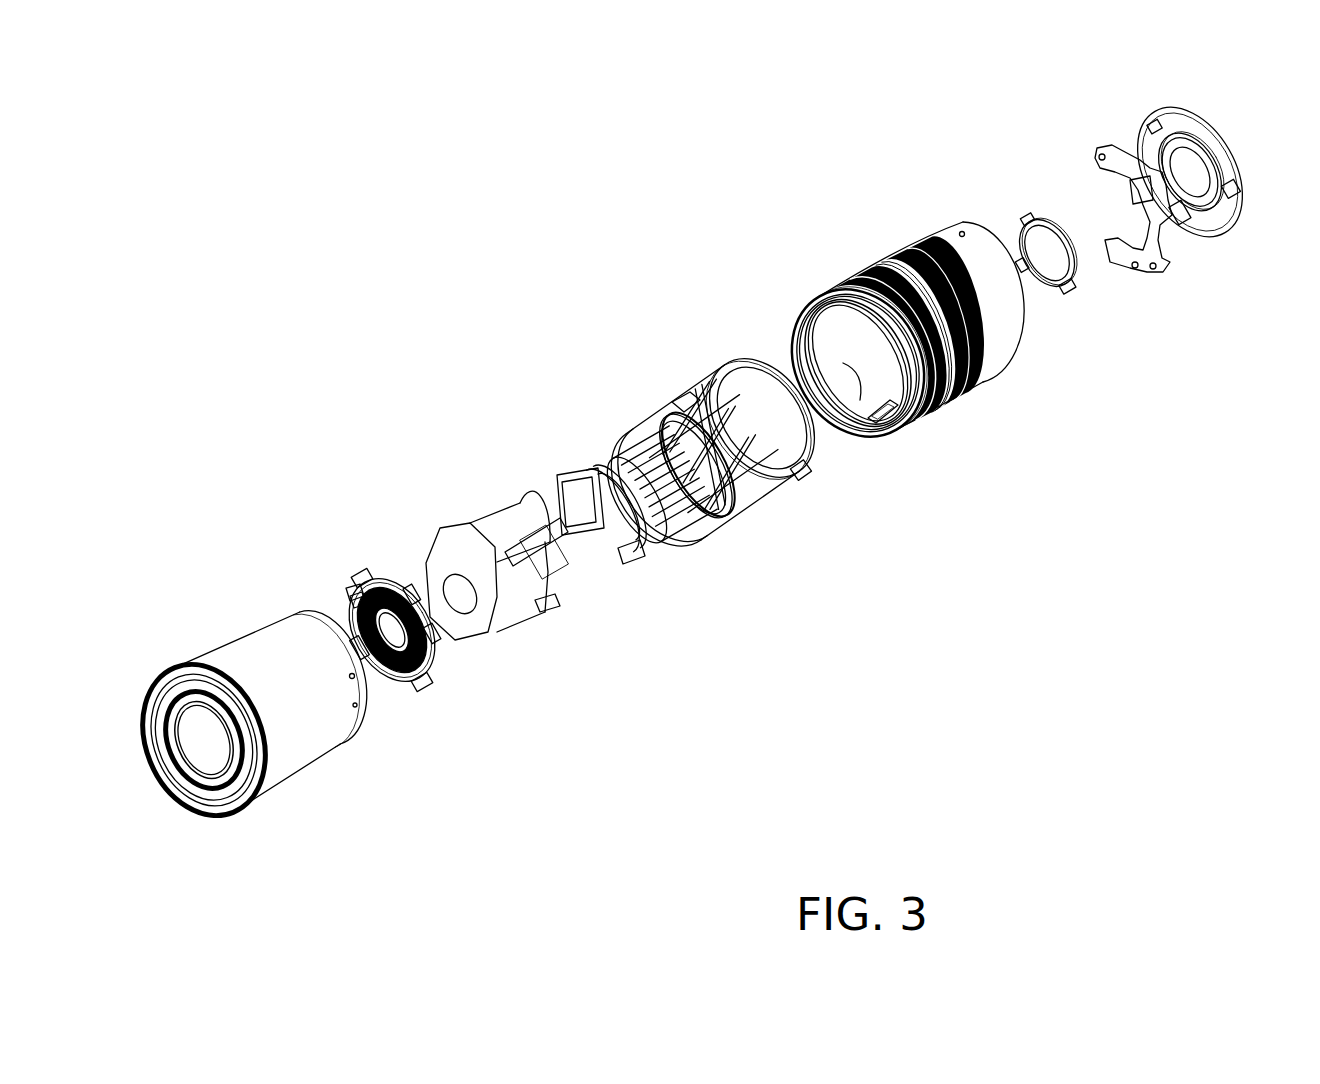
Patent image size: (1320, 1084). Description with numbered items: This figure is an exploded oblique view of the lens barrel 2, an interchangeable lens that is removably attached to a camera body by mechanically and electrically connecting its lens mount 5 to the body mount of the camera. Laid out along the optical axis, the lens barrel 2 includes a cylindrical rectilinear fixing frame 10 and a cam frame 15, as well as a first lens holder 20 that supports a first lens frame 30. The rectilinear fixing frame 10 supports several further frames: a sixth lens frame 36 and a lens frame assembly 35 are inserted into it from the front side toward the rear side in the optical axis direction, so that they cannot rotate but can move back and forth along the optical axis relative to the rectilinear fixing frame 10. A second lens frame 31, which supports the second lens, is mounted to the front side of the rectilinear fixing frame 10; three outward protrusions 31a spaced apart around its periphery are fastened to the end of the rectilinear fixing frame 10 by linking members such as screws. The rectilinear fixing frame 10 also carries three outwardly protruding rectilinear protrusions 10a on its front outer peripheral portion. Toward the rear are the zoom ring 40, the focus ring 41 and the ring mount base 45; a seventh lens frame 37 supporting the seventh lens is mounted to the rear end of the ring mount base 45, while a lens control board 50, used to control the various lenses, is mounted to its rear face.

The lens barrel 2 is at (518, 348).
The lens mount 5 is at (1223, 245).
The rectilinear fixing frame 10 is at (678, 508).
The rectilinear protrusion 10a is at (683, 403).
The cam frame 15 is at (745, 517).
The first lens holder 20 is at (328, 758).
The first lens frame 30 is at (170, 690).
The second lens frame 31 is at (430, 693).
The protrusion 31a is at (355, 590).
The lens frame assembly 35 is at (520, 633).
The sixth lens frame 36 is at (632, 573).
The seventh lens frame 37 is at (1070, 305).
The zoom ring 40 is at (972, 408).
The focus ring 41 is at (933, 430).
The ring mount base 45 is at (862, 383).
The lens control board 50 is at (1162, 283).